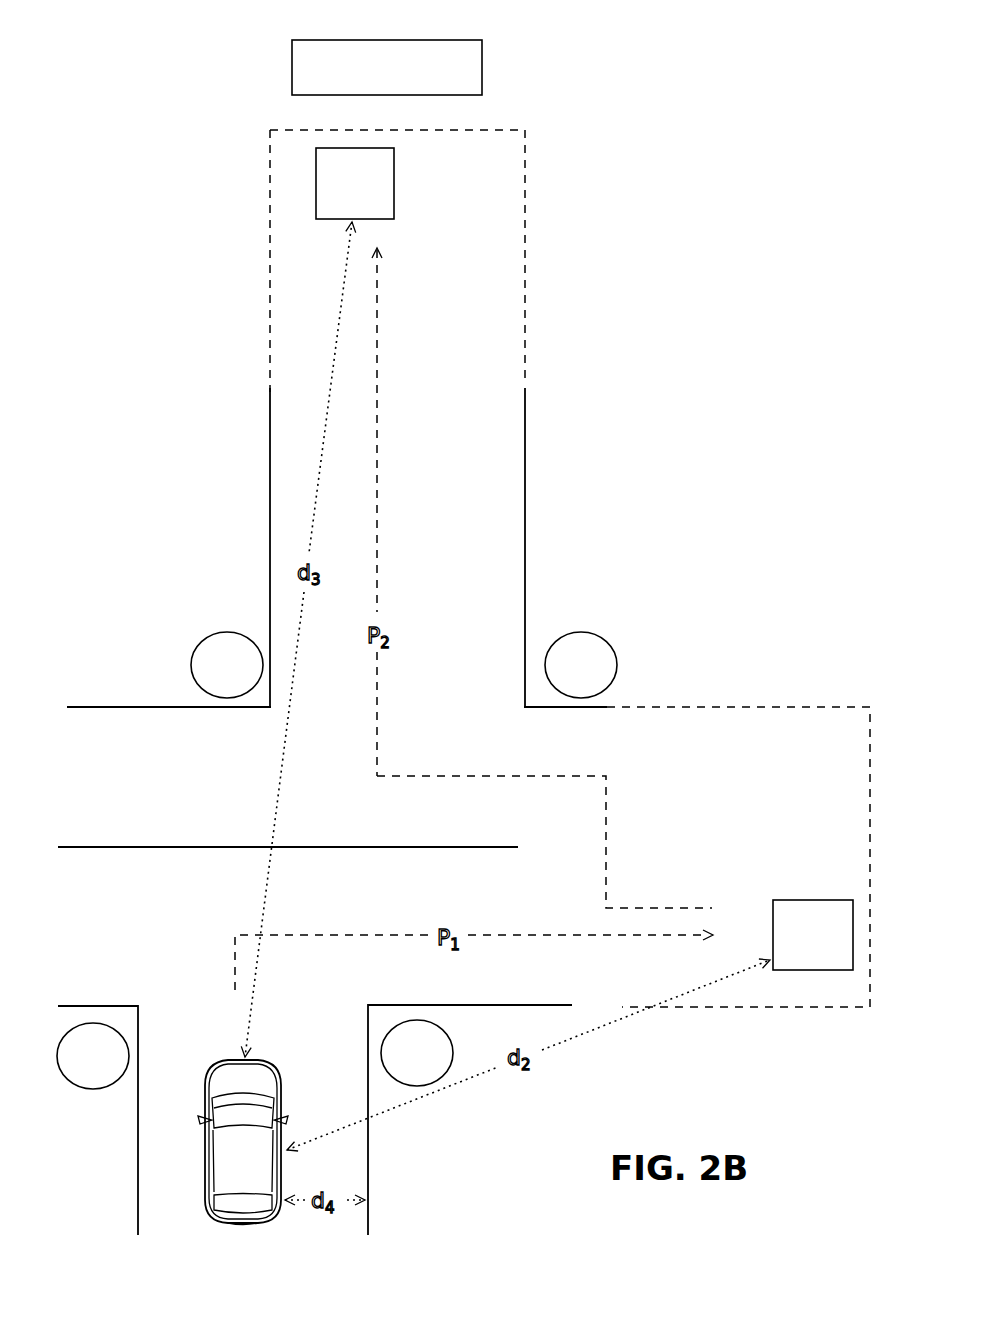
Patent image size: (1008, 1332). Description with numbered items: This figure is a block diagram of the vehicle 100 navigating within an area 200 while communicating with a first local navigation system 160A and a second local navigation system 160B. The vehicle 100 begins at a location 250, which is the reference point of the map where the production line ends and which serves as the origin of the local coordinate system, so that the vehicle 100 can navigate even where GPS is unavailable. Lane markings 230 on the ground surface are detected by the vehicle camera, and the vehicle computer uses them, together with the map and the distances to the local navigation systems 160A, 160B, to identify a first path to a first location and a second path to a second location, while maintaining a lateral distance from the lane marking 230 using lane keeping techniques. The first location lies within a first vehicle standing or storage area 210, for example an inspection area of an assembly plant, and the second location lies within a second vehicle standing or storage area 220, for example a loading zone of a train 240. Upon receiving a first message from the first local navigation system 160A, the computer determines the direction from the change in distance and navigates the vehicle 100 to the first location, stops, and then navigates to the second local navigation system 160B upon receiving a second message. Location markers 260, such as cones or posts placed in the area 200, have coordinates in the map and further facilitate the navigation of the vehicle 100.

The vehicle 100 is at (243, 1141).
The first local navigation system 160A is at (813, 935).
The second local navigation system 160B is at (355, 183).
The area 200 is at (628, 190).
The first vehicle standing or storage area 210 is at (785, 705).
The second vehicle standing or storage area 220 is at (303, 253).
The lane markings 230 is at (527, 436).
The train 240 is at (337, 40).
The location 250 is at (243, 1228).
The location markers 260 is at (337, 860).